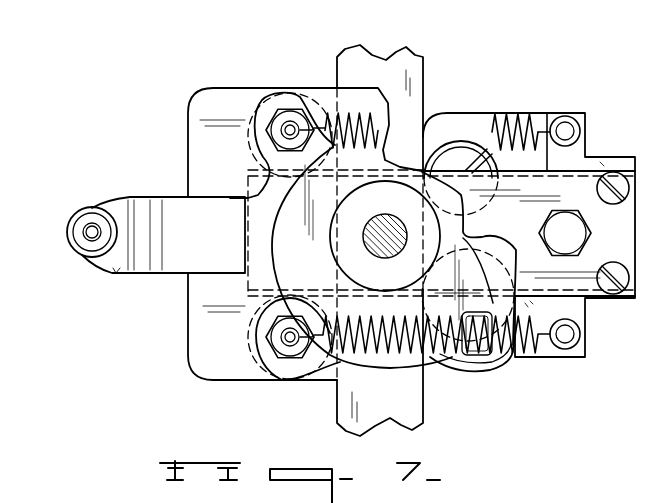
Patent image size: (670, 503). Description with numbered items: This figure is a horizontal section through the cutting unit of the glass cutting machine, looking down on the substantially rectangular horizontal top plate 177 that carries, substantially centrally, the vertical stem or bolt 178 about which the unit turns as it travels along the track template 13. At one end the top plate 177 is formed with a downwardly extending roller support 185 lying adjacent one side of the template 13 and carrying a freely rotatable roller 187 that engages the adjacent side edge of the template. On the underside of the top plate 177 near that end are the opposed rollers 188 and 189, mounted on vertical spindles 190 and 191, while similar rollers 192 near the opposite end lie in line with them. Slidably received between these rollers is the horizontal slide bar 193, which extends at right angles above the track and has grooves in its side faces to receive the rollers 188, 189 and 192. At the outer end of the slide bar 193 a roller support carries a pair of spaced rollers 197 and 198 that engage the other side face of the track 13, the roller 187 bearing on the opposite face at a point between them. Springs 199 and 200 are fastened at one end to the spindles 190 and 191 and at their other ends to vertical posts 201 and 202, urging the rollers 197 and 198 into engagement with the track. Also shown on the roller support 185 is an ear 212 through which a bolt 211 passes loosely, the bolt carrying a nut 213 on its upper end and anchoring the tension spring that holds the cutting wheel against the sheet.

The track template 13 is at (371, 68).
The horizontal top plate 177 is at (200, 140).
The vertical stem or bolt 178 is at (375, 247).
The roller support 185 is at (150, 265).
The roller 187 is at (233, 240).
The roller 188 is at (248, 349).
The roller 189 is at (248, 98).
The vertical spindle 190 is at (290, 345).
The vertical spindle 191 is at (290, 127).
The rollers 192 is at (478, 376).
The horizontal slide bar 193 is at (580, 177).
The roller 197 is at (482, 241).
The roller 198 is at (452, 150).
The spring 199 is at (402, 373).
The spring 200 is at (515, 113).
The vertical post 201 is at (582, 333).
The vertical post 202 is at (565, 125).
The bolt 211 is at (92, 230).
The ear 212 is at (115, 272).
The nut 213 is at (72, 228).